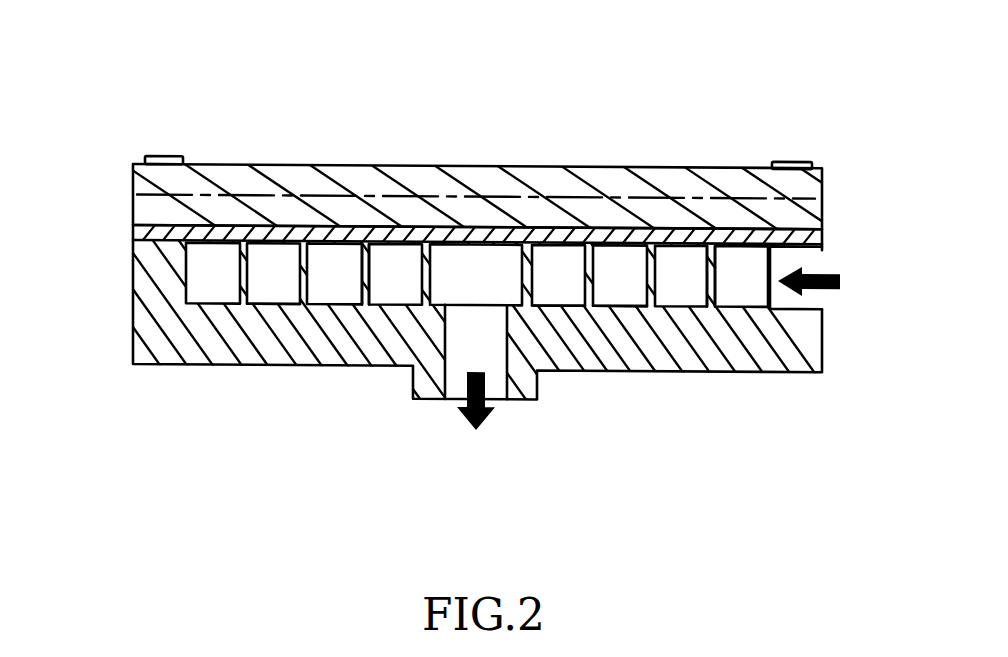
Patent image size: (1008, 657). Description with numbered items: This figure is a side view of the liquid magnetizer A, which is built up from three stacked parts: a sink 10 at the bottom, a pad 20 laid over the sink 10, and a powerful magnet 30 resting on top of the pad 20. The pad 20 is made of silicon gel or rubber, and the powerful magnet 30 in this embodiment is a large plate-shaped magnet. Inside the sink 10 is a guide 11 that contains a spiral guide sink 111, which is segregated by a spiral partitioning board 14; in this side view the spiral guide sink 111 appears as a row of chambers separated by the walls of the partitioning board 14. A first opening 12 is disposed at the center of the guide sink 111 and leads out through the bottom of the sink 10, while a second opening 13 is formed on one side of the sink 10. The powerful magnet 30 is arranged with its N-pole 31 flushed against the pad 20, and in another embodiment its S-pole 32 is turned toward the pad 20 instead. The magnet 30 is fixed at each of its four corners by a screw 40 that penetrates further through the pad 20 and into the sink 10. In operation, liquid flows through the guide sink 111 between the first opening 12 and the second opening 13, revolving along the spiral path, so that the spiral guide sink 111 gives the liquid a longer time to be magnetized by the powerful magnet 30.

The liquid magnetizer A is at (489, 265).
The sink 10 is at (160, 352).
The guide 11 is at (185, 287).
The spiral guide sink 111 is at (647, 463).
The first opening 12 is at (497, 388).
The second opening 13 is at (818, 293).
The spiral partitioning board 14 is at (710, 295).
The pad 20 is at (133, 236).
The powerful magnet 30 is at (479, 158).
The N-pole 31 is at (900, 227).
The S-pole 32 is at (582, 187).
The screw 40 is at (879, 92).